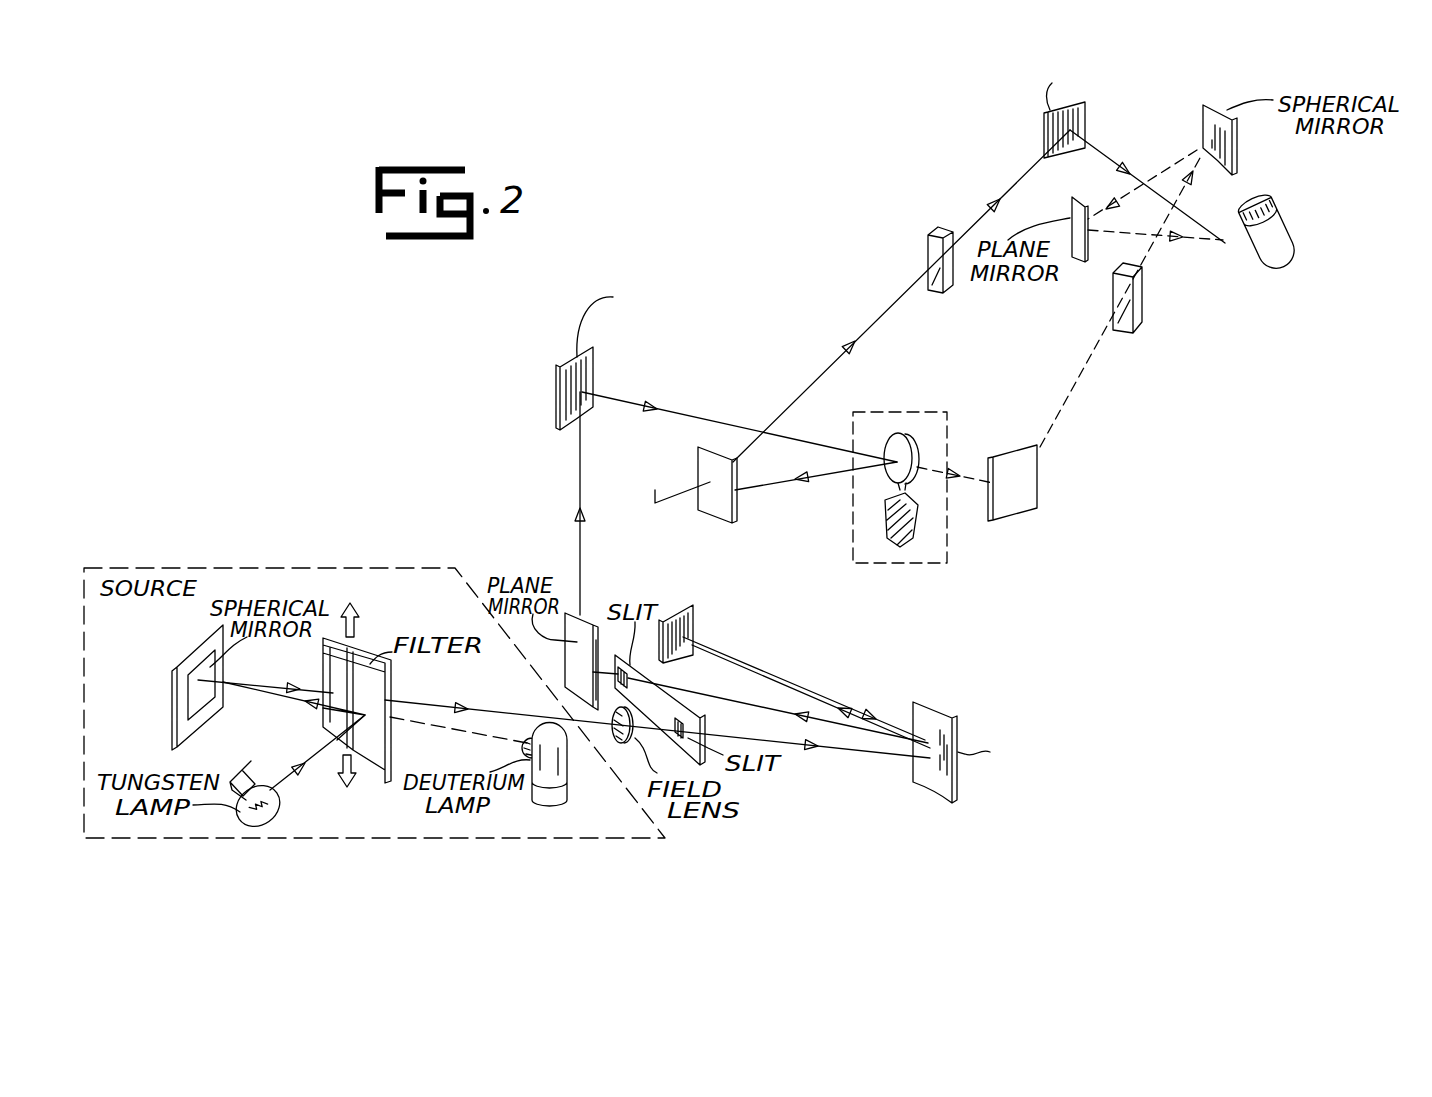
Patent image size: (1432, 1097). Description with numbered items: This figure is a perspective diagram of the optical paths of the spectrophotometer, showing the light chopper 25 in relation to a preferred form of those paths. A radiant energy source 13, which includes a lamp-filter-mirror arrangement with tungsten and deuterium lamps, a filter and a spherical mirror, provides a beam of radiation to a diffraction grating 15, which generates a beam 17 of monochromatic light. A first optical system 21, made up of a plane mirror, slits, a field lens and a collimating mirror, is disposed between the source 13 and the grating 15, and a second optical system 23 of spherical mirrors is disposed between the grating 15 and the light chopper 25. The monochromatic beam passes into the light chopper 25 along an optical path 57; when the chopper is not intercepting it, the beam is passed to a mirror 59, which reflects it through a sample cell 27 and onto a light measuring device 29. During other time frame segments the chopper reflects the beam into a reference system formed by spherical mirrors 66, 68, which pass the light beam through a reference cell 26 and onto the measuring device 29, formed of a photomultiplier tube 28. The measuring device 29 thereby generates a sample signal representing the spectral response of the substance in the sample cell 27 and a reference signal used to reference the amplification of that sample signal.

The radiant energy source 13 is at (165, 568).
The diffraction grating 15 is at (697, 622).
The beam of monochromatic radiant energy 17 is at (837, 703).
The first optical system 21 is at (828, 772).
The second optical system 23 is at (470, 422).
The light chopper 25 is at (945, 545).
The reference cell 26 is at (925, 248).
The sample cell 27 is at (1138, 310).
The photomultiplier tube 28 is at (1243, 255).
The light measuring device 29 is at (1300, 212).
The optical path 57 is at (688, 410).
The mirror 59 is at (1030, 490).
The spherical mirror 66 is at (715, 507).
The spherical mirror 68 is at (1085, 118).